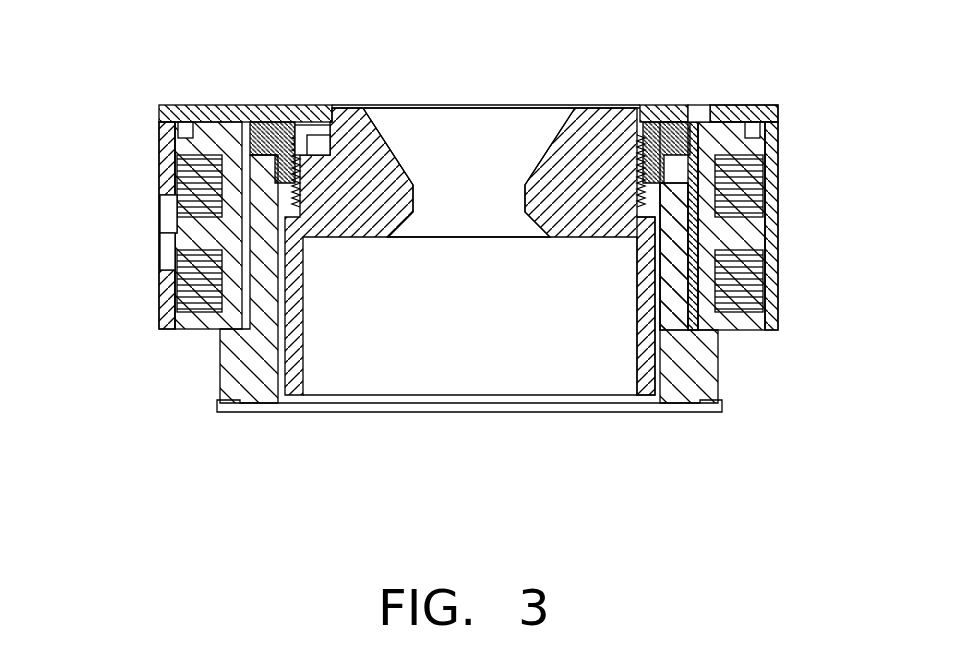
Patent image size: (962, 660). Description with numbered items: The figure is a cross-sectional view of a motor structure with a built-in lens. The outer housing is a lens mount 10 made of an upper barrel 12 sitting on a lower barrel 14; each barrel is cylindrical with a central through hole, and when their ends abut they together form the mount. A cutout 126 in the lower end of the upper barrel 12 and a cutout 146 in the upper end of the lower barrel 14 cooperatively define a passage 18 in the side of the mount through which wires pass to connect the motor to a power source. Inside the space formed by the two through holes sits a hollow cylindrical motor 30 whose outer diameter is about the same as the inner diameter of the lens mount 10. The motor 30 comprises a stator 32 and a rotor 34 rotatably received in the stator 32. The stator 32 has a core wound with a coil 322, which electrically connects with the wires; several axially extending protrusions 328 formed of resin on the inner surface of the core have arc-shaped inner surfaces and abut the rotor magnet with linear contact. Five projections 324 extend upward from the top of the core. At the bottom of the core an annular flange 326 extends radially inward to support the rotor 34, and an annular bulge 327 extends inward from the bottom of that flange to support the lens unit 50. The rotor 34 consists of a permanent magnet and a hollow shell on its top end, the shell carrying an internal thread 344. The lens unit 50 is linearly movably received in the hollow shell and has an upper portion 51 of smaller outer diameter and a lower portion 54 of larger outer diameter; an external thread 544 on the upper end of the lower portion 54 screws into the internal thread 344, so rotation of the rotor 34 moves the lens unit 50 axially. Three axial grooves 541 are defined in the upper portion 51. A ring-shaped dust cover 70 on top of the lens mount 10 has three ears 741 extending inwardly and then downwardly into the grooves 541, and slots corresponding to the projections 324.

The lens mount 10 is at (862, 235).
The upper barrel 12 is at (768, 220).
The lower barrel 14 is at (772, 308).
The passage 18 is at (58, 195).
The cutout 126 is at (170, 212).
The cutout 146 is at (170, 253).
The motor 30 is at (868, 135).
The stator 32 is at (707, 203).
The rotor 34 is at (672, 198).
The coil 322 is at (727, 303).
The projections 324 is at (700, 118).
The annular flange 326 is at (230, 345).
The annular bulge 327 is at (281, 395).
The protrusions 328 is at (752, 105).
The internal thread 344 is at (288, 143).
The lens unit 50 is at (447, 138).
The upper portion 51 is at (600, 130).
The lower portion 54 is at (643, 348).
The grooves 541 is at (302, 135).
The external thread 544 is at (295, 205).
The dust cover 70 is at (190, 102).
The ears 741 is at (325, 128).